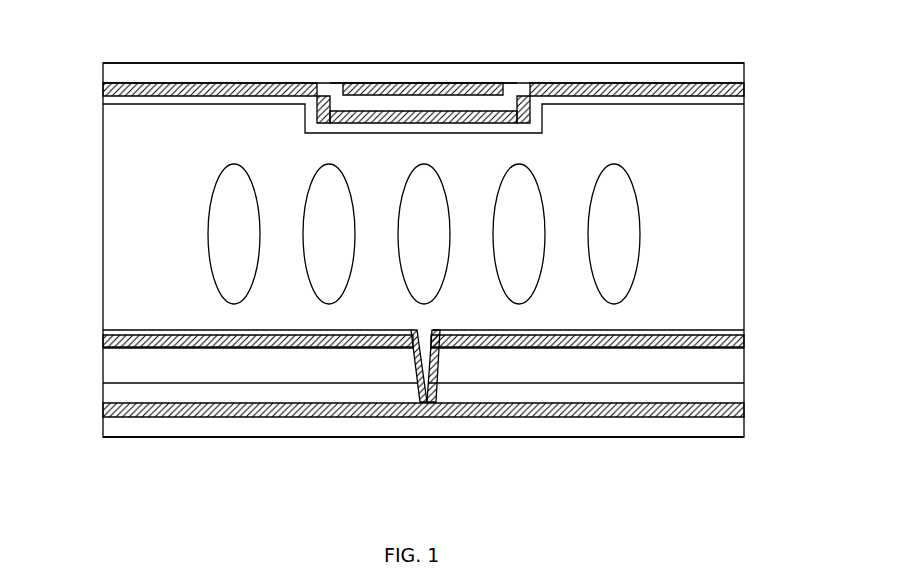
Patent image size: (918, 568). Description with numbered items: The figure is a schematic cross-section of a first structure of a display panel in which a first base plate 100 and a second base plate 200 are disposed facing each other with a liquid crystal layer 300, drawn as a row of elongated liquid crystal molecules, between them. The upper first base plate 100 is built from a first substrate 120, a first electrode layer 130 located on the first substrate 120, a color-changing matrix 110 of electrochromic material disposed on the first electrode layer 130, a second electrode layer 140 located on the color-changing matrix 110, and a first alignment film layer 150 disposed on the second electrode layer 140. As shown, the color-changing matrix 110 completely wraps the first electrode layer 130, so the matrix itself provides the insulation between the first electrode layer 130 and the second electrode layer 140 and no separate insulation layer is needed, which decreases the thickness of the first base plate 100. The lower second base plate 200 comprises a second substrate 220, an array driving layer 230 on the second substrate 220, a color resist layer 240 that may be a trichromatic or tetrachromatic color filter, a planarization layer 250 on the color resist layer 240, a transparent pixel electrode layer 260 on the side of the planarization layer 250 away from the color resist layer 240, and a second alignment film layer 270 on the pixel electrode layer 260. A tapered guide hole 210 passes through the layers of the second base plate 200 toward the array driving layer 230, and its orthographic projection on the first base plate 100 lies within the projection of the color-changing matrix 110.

The first base plate 100 is at (79, 63).
The color-changing matrix 110 is at (362, 100).
The first substrate 120 is at (730, 73).
The first electrode layer 130 is at (410, 83).
The second electrode layer 140 is at (473, 112).
The first alignment film layer 150 is at (608, 104).
The second base plate 200 is at (79, 332).
The guide hole 210 is at (422, 365).
The second substrate 220 is at (728, 425).
The array driving layer 230 is at (553, 418).
The color resist layer 240 is at (175, 391).
The planarization layer 250 is at (248, 366).
The pixel electrode layer 260 is at (323, 345).
The second alignment film layer 270 is at (628, 333).
The liquid crystal layer 300 is at (79, 110).